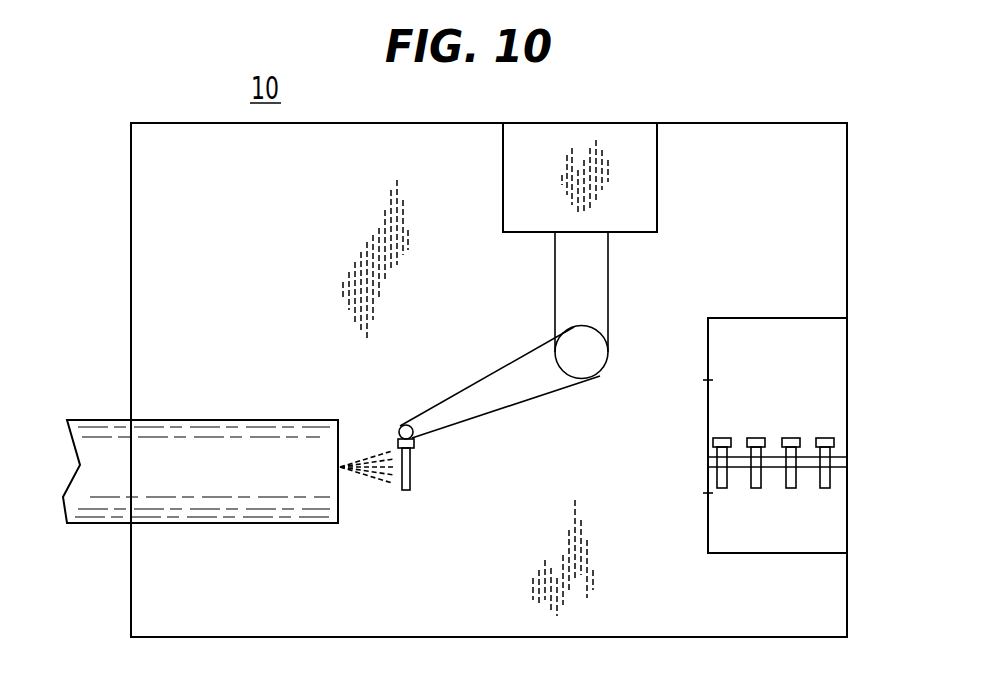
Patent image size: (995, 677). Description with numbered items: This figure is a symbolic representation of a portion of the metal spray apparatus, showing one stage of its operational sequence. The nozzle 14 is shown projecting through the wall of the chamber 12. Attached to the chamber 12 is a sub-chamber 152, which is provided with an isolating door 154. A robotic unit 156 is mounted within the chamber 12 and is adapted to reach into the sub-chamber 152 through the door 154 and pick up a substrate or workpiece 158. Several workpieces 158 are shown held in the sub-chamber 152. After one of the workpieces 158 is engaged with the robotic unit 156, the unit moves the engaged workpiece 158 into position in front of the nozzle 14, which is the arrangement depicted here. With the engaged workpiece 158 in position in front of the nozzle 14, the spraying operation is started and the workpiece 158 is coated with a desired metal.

The chamber 12 is at (131, 213).
The nozzle 14 is at (252, 420).
The sub-chamber 152 is at (755, 318).
The isolating door 154 is at (708, 440).
The robotic unit 156 is at (654, 190).
The workpiece 158 is at (412, 466).